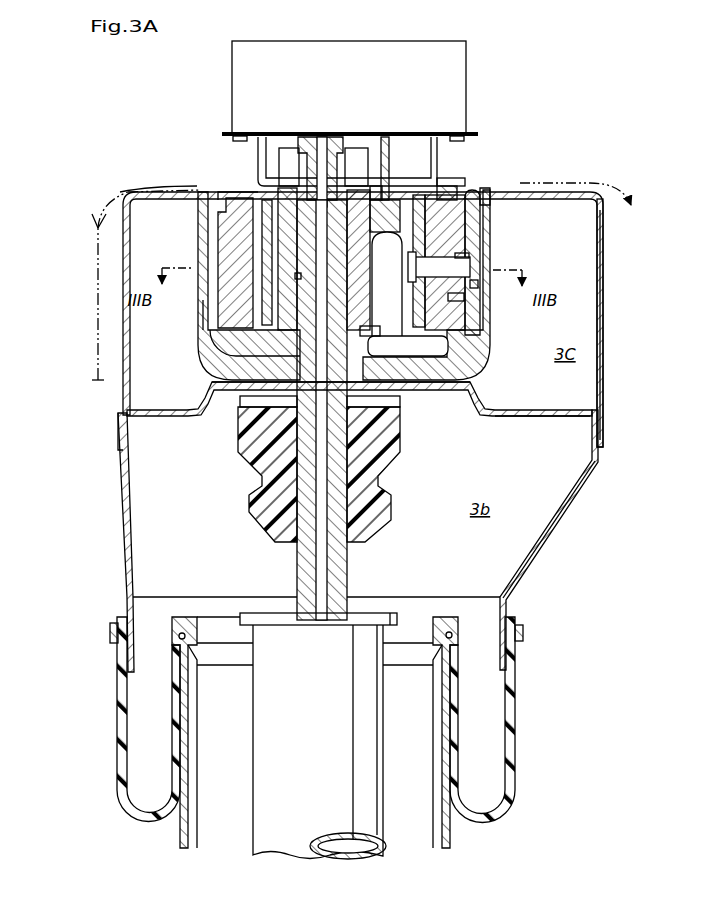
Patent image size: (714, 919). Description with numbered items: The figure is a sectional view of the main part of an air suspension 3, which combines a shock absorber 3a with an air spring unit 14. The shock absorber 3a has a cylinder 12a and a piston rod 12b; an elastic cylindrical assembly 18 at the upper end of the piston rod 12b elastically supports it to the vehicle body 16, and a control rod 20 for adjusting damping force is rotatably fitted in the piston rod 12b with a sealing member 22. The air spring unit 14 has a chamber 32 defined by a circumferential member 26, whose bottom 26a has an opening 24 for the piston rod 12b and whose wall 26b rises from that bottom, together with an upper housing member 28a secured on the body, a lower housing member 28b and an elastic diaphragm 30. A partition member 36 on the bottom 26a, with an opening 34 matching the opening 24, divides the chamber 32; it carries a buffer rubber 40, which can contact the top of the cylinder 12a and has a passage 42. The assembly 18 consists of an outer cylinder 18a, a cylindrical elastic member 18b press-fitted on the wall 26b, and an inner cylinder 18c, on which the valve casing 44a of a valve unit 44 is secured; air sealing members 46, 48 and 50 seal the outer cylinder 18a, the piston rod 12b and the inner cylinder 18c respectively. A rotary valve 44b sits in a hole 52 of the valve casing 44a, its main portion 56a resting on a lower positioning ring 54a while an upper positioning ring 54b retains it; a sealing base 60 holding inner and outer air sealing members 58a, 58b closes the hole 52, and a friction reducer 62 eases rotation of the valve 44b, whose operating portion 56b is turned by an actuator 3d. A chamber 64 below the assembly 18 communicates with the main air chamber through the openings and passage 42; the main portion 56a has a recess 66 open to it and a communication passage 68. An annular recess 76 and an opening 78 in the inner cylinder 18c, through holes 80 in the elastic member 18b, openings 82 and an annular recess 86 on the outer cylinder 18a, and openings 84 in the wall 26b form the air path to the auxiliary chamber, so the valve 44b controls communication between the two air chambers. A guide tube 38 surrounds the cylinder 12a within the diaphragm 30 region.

The air suspension 3 is at (64, 212).
The shock absorber 3a is at (246, 822).
The actuator 3d is at (410, 46).
The cylinder 12a is at (372, 812).
The piston rod 12b is at (305, 575).
The air spring unit 14 is at (607, 408).
The vehicle body 16 is at (609, 178).
The elastic cylindrical assembly 18 is at (236, 184).
The outer cylinder 18a is at (186, 190).
The cylindrical elastic member 18b is at (230, 192).
The inner cylinder 18c is at (258, 196).
The control rod 20 is at (306, 200).
The sealing member 22 is at (283, 190).
The opening 24 is at (462, 367).
The circumferential member 26 is at (200, 362).
The bottom 26a is at (252, 372).
The wall 26b is at (201, 322).
The upper housing member 28a is at (606, 300).
The lower housing member 28b is at (548, 560).
The diaphragm 30 is at (516, 722).
The chamber 32 is at (606, 360).
The opening 34 is at (242, 398).
The partition member 36 is at (543, 420).
The guide tube 38 is at (452, 840).
The buffer rubber 40 is at (255, 512).
The passage 42 is at (382, 406).
The valve unit 44 is at (396, 200).
The valve casing 44a is at (286, 378).
The rotary valve 44b is at (379, 184).
The annular air sealing member 46 is at (473, 190).
The annular air sealing member 48 is at (295, 276).
The annular air sealing member 50 is at (216, 232).
The hole 52 is at (408, 340).
The lower positioning ring 54a is at (373, 327).
The upper positioning ring 54b is at (446, 188).
The main portion 56a is at (428, 326).
The operating portion 56b is at (386, 165).
The inner air sealing member 58a is at (360, 186).
The outer air sealing member 58b is at (466, 180).
The sealing base 60 is at (322, 212).
The friction reducer 62 is at (486, 196).
The chamber 64 is at (450, 387).
The recess 66 is at (216, 289).
The communication passage 68 is at (387, 286).
The annular recess 76 is at (455, 312).
The opening 78 is at (478, 286).
The through holes 80 is at (464, 297).
The openings 82 is at (472, 270).
The openings 84 is at (468, 252).
The annular recess 86 is at (470, 262).